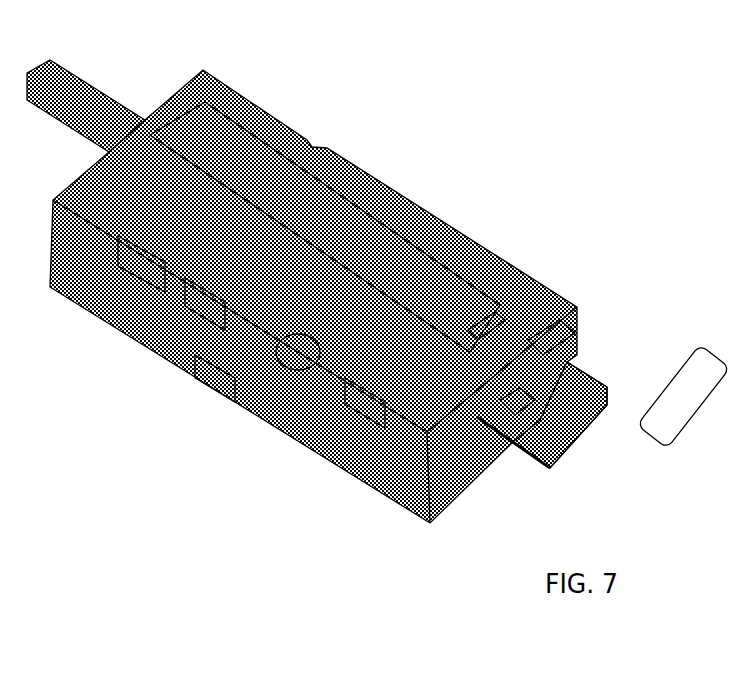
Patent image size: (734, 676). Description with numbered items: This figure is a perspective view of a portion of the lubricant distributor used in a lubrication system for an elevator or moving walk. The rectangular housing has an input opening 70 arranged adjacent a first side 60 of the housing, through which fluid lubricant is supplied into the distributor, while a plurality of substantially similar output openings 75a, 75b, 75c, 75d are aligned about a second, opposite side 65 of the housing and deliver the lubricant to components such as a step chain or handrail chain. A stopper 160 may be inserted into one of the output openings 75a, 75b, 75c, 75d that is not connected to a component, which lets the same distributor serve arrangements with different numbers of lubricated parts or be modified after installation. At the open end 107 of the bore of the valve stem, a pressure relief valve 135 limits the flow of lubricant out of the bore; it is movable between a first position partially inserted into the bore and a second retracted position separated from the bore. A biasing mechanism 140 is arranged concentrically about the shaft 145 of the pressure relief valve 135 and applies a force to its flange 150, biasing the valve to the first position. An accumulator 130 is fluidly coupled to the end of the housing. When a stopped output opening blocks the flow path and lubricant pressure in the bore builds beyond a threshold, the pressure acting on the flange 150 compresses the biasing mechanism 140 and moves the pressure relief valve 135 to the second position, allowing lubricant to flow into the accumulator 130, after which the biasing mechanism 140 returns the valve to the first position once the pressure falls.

The first side 60 is at (465, 243).
The second side 65 is at (83, 265).
The input opening 70 is at (362, 193).
The output opening 75a is at (145, 250).
The output opening 75b is at (205, 297).
The output opening 75c is at (313, 358).
The output opening 75d is at (363, 405).
The open end 107 is at (482, 345).
The accumulator 130 is at (651, 402).
The pressure relief valve 135 is at (518, 410).
The biasing mechanism 140 is at (537, 430).
The shaft 145 is at (550, 397).
The flange 150 is at (551, 349).
The stopper 160 is at (212, 388).